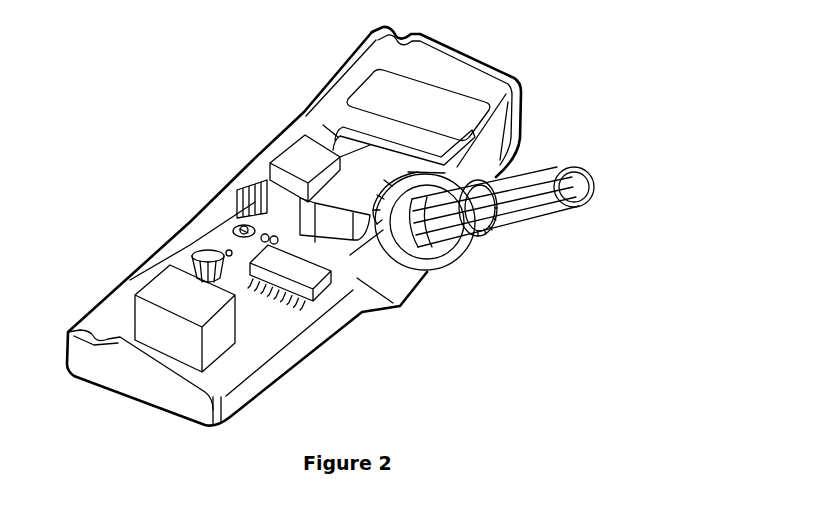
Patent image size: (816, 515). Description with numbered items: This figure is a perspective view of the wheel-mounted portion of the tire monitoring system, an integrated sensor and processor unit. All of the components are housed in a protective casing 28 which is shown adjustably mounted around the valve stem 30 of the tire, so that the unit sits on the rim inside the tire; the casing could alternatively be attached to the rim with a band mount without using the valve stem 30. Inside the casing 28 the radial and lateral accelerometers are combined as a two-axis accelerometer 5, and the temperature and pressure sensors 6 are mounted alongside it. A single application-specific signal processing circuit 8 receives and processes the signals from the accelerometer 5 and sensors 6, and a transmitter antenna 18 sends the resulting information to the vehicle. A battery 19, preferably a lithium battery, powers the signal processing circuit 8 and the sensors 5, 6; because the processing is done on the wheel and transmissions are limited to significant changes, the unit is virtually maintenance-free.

The two-axis accelerometer 5 is at (150, 278).
The temperature and pressure sensors 6 is at (195, 250).
The signal processing circuit 8 is at (323, 280).
The transmitter antenna 18 is at (244, 226).
The battery 19 is at (413, 82).
The casing 28 is at (522, 130).
The valve stem 30 is at (565, 192).